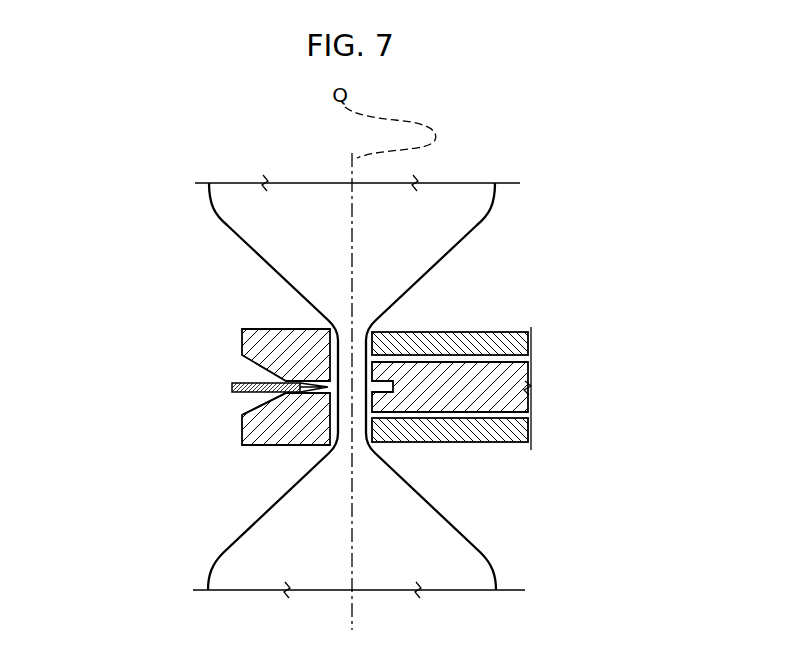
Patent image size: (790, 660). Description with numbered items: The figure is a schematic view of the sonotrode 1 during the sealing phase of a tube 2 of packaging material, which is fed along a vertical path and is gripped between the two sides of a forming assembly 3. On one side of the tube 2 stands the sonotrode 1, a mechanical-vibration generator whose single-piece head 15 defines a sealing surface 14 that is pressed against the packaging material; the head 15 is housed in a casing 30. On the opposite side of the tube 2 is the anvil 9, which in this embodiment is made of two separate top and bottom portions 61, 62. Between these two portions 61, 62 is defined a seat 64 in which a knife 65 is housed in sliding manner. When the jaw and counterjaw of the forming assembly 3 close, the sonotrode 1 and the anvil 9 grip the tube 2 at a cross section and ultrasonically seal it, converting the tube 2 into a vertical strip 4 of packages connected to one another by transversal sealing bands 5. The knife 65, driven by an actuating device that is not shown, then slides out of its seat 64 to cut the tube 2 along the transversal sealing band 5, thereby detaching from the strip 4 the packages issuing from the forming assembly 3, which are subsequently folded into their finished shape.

The sonotrode 1 is at (553, 310).
The tube of packaging material 2 is at (227, 225).
The forming assembly 3 is at (478, 448).
The vertical strip of packages 4 is at (335, 347).
The transversal sealing band 5 is at (336, 427).
The anvil 9 is at (203, 363).
The sealing surface 14 is at (367, 358).
The head 15 is at (521, 394).
The casing 30 is at (475, 353).
The top portion of anvil 61 is at (242, 342).
The bottom portion of anvil 62 is at (243, 428).
The seat 64 is at (313, 402).
The knife 65 is at (232, 385).